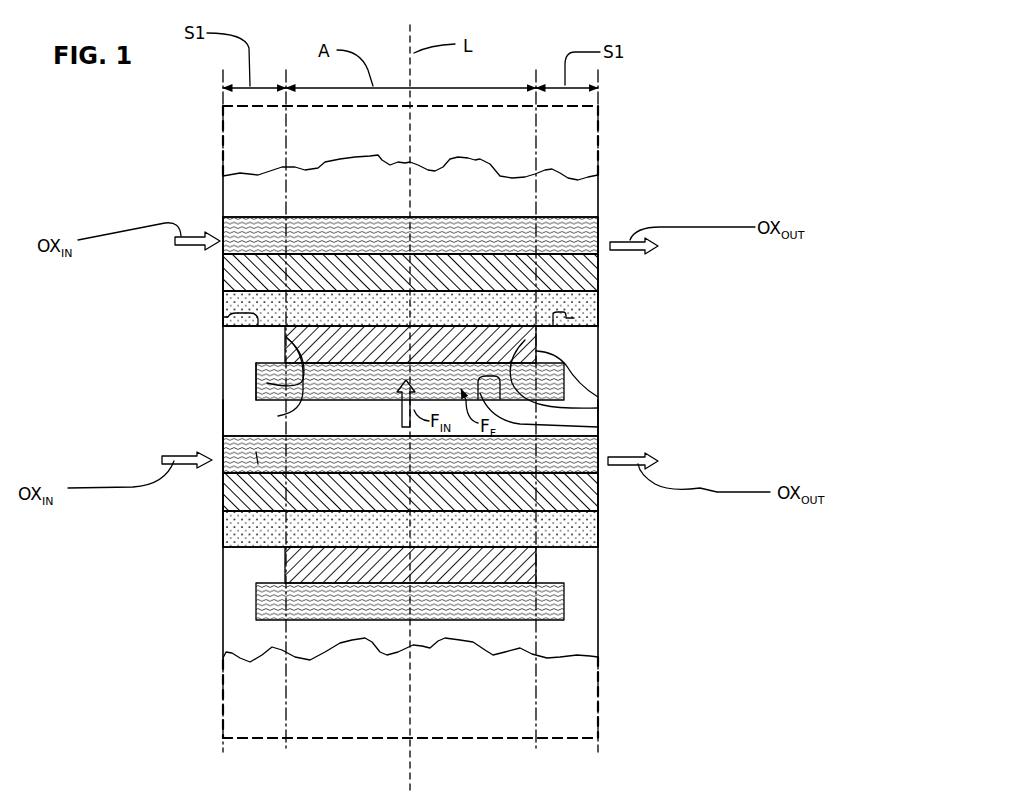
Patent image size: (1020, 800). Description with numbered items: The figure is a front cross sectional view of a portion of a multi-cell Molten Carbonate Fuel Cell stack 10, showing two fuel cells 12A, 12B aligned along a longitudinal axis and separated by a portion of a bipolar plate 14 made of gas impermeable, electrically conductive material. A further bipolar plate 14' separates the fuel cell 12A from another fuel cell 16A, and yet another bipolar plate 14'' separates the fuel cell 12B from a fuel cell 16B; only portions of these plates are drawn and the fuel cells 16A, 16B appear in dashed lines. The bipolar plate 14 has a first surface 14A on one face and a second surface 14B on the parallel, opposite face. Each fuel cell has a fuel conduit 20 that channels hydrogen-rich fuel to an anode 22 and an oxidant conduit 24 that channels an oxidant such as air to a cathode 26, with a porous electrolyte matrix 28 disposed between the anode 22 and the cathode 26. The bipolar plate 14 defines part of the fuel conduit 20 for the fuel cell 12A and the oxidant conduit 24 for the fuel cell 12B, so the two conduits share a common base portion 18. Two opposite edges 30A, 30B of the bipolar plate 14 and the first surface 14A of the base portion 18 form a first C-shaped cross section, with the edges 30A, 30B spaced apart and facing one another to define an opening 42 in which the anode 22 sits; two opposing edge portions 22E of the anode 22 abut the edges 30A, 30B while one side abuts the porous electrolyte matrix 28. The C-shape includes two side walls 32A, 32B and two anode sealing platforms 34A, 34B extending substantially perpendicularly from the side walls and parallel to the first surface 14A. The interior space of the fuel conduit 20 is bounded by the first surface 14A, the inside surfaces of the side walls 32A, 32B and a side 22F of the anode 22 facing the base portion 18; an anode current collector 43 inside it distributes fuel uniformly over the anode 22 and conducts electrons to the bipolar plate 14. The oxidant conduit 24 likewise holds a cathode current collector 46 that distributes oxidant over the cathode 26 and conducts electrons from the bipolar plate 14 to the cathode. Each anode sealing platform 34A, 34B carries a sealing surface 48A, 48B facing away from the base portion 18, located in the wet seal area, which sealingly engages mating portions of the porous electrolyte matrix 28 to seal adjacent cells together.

The MCFC stack 10 is at (93, 200).
The fuel cell 12A is at (672, 260).
The fuel cell 12B is at (663, 503).
The bipolar plate 14 is at (517, 417).
The bipolar plate 14' is at (445, 171).
The bipolar plate 14'' is at (492, 662).
The first surface 14A is at (598, 427).
The second surface 14B is at (307, 436).
The fuel cell 16A is at (203, 154).
The fuel cell 16B is at (188, 673).
The base portion 18 is at (385, 203).
The fuel conduit 20 is at (674, 382).
The anode 22 is at (503, 346).
The edge portions 22E is at (598, 397).
The side 22F is at (347, 364).
The oxidant conduit 24 is at (598, 223).
The cathode 26 is at (598, 290).
The porous electrolyte matrix 28 is at (598, 305).
The opposite edge 30A is at (598, 408).
The opposite edge 30B is at (283, 385).
The side wall 32A is at (592, 371).
The side wall 32B is at (239, 393).
The anode sealing platform 34A is at (585, 337).
The anode sealing platform 34B is at (259, 347).
The opening 42 is at (383, 318).
The anode current collector 43 is at (278, 416).
The cathode current collector 46 is at (257, 460).
The sealing surface 48A is at (574, 318).
The sealing surface 48B is at (223, 317).